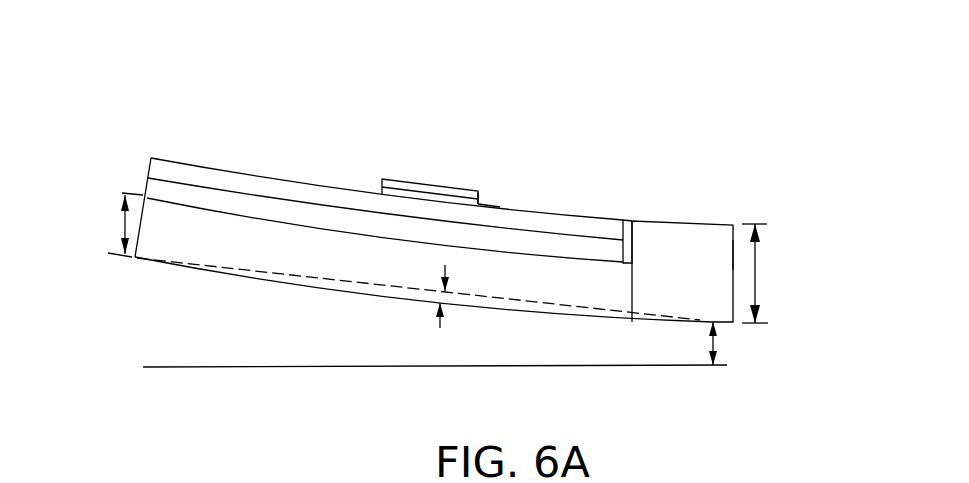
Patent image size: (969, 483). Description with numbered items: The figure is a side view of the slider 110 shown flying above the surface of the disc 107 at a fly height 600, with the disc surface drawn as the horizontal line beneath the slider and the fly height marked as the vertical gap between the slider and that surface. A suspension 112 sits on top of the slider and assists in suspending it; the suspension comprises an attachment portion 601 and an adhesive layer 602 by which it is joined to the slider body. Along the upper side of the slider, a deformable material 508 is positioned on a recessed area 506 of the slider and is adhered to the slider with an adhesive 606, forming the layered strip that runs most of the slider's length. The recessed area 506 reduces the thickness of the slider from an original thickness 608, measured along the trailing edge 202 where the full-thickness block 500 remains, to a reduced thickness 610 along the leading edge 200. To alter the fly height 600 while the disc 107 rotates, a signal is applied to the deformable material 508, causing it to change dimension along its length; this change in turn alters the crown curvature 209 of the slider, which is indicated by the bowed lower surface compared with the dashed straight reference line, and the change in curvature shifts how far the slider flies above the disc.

The slider 110 is at (296, 55).
The leading edge 200 is at (113, 233).
The deformable material 508 is at (202, 173).
The adhesive 606 is at (322, 212).
The suspension 112 is at (447, 181).
The attachment portion 601 is at (488, 192).
The adhesive layer 602 is at (480, 205).
The recessed area 506 is at (602, 249).
The support block 500 is at (660, 221).
The trailing edge 202 is at (733, 254).
The original thickness 608 is at (757, 277).
The fly height 600 is at (715, 340).
The disc 107 is at (203, 367).
The crown curvature 209 is at (440, 267).
The reduced thickness 610 is at (120, 217).